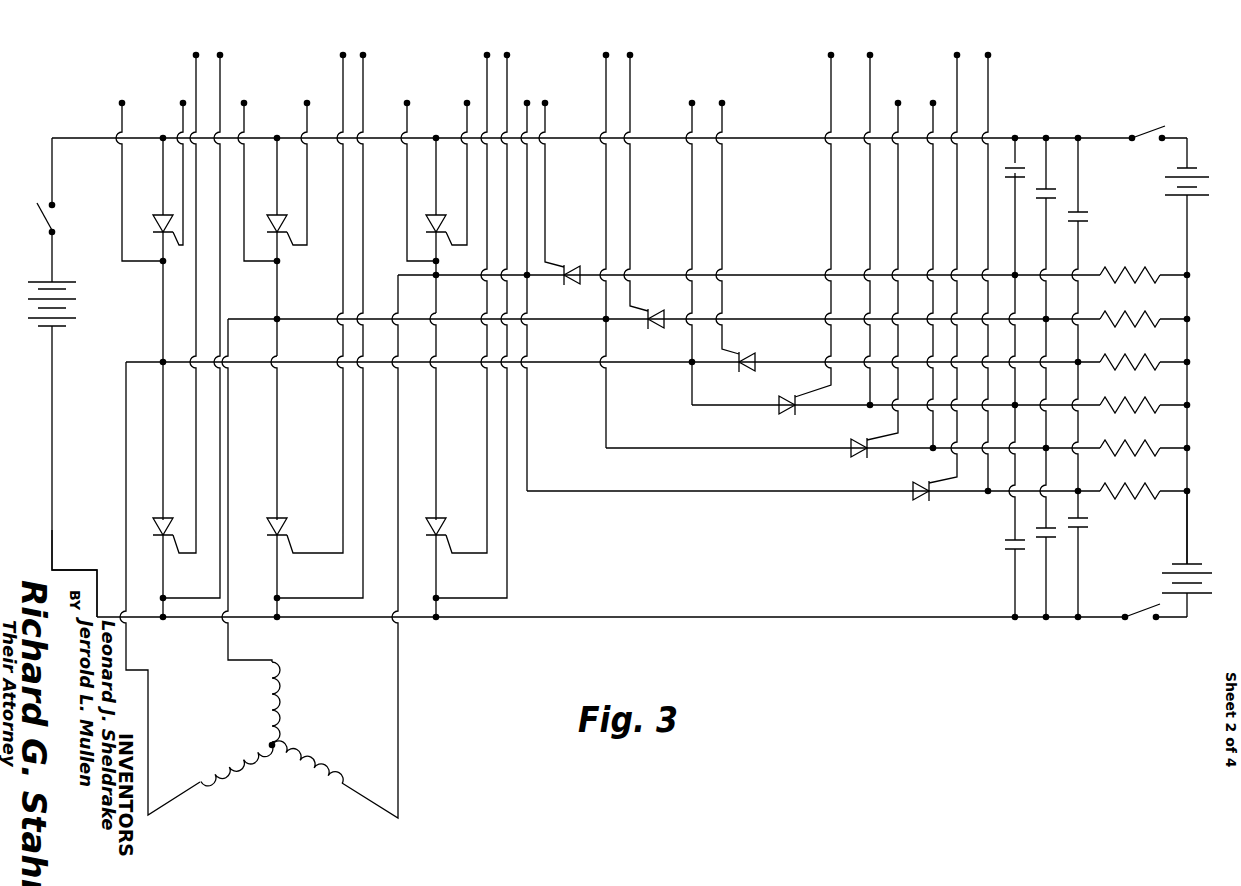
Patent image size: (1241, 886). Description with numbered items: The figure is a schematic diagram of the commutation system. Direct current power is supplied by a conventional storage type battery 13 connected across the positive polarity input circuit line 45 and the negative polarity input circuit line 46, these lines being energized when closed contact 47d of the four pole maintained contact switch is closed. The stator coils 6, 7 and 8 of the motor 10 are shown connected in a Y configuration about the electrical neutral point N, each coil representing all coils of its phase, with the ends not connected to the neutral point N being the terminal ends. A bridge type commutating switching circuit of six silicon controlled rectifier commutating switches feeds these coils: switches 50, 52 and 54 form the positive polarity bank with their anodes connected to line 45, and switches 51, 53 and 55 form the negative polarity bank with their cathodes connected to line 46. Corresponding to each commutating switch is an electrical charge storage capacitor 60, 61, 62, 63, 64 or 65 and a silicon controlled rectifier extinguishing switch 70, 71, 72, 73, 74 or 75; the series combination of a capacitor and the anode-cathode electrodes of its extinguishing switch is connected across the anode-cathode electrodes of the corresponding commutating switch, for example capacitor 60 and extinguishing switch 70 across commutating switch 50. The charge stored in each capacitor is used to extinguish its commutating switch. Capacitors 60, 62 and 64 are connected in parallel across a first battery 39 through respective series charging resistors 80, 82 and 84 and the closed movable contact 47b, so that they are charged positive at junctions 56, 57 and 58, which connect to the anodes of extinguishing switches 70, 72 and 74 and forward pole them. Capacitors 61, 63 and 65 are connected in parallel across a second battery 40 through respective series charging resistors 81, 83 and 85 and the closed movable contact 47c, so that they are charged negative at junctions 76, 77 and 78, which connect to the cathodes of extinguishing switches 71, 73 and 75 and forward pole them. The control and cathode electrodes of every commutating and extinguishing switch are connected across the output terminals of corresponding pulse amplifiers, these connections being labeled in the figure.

The positive polarity input circuit line 45 is at (68, 137).
The closed contact of switch 47 47d is at (40, 210).
The storage type battery 13 is at (78, 306).
The negative polarity input circuit line 46 is at (80, 570).
The silicon controlled rectifier commutating switch 50 is at (155, 225).
The silicon controlled rectifier commutating switch 51 is at (170, 527).
The silicon controlled rectifier commutating switch 52 is at (269, 225).
The silicon controlled rectifier commutating switch 53 is at (288, 527).
The silicon controlled rectifier commutating switch 54 is at (428, 225).
The silicon controlled rectifier commutating switch 55 is at (447, 527).
The silicon controlled rectifier extinguishing switch 70 is at (746, 356).
The silicon controlled rectifier extinguishing switch 71 is at (790, 401).
The silicon controlled rectifier extinguishing switch 72 is at (652, 310).
The silicon controlled rectifier extinguishing switch 73 is at (852, 446).
The silicon controlled rectifier extinguishing switch 74 is at (570, 267).
The silicon controlled rectifier extinguishing switch 75 is at (932, 502).
The capacitor 60 is at (1089, 220).
The capacitor 61 is at (1005, 545).
The capacitor 62 is at (1036, 195).
The capacitor 63 is at (1051, 536).
The capacitor 64 is at (1008, 178).
The capacitor 65 is at (1086, 524).
The junction 56 is at (1078, 364).
The junction 57 is at (1045, 323).
The junction 58 is at (1015, 278).
The junction 76 is at (1014, 405).
The junction 77 is at (1045, 447).
The junction 78 is at (1077, 490).
The series charging resistor 80 is at (1155, 364).
The series charging resistor 81 is at (1155, 407).
The series charging resistor 82 is at (1155, 322).
The series charging resistor 83 is at (1155, 449).
The series charging resistor 84 is at (1138, 275).
The series charging resistor 85 is at (1155, 492).
The battery 39 is at (1209, 198).
The battery 40 is at (1210, 587).
The closed movable contact of switch 47 47b is at (1145, 132).
The closed movable contact of switch 47 47c is at (1142, 628).
The stator coil 6 is at (320, 760).
The stator coil 7 is at (243, 776).
The stator coil 8 is at (283, 706).
The electrical neutral point N is at (276, 744).
The motor 10 is at (259, 546).